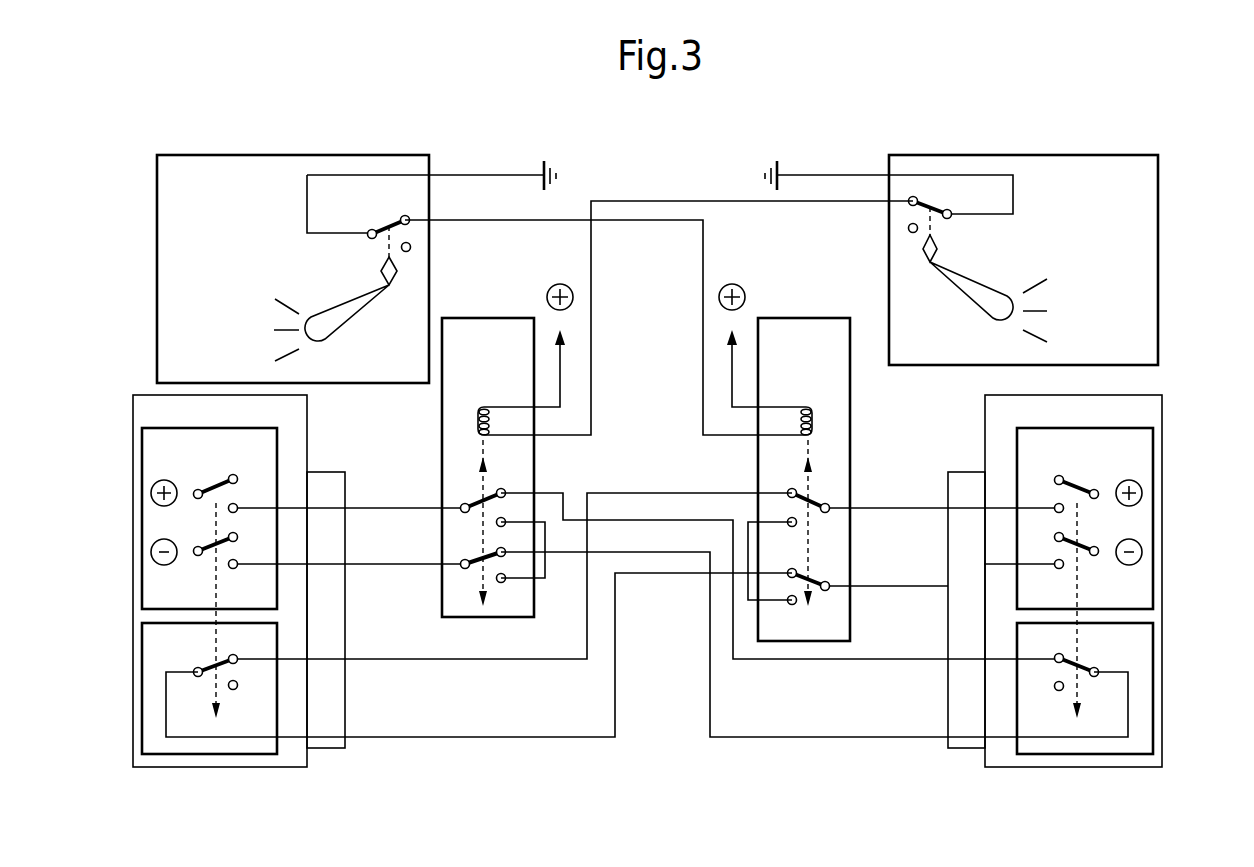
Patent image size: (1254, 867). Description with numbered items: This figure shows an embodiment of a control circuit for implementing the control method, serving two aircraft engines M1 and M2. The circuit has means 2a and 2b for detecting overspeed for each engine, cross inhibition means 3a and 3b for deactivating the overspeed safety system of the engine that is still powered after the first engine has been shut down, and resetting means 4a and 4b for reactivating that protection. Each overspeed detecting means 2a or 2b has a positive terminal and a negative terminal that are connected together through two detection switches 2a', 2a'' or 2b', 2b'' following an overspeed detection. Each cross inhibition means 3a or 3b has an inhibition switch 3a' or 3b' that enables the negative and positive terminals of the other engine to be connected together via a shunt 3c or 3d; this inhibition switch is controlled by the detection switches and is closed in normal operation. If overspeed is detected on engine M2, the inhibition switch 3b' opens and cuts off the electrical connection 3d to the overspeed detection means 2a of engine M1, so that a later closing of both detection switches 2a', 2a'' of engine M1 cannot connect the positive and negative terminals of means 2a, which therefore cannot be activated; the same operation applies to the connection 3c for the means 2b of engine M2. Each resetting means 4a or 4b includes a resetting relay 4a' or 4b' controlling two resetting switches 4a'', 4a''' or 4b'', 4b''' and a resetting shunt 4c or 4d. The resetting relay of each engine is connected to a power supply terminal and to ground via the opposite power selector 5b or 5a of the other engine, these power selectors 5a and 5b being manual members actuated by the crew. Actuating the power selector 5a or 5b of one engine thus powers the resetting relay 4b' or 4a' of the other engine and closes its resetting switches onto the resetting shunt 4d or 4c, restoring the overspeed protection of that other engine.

The first engine M1 is at (265, 128).
The second engine M2 is at (1073, 128).
The power selector 5a is at (157, 264).
The power selector 5b is at (1158, 226).
The resetting means 4a is at (573, 454).
The resetting means 4b is at (732, 472).
The resetting relay 4a' is at (691, 318).
The resetting relay 4b' is at (618, 327).
The resetting switch 4a'' is at (369, 496).
The resetting switch 4a''' is at (369, 554).
The resetting switch 4b'' is at (924, 496).
The resetting switch 4b''' is at (924, 575).
The resetting shunt 4c is at (546, 558).
The resetting shunt 4d is at (746, 585).
The overspeed detecting means 2a is at (168, 573).
The overspeed detecting means 2b is at (1126, 573).
The detection switch 2a' is at (156, 479).
The detection switch 2a'' is at (158, 539).
The detection switch 2b' is at (1134, 481).
The detection switch 2b'' is at (1139, 539).
The cross inhibition means 3a is at (429, 626).
The cross inhibition means 3b is at (864, 623).
The inhibition switch 3a' is at (436, 591).
The inhibition switch 3b' is at (858, 592).
The shunt 3c is at (407, 756).
The shunt 3d is at (755, 756).